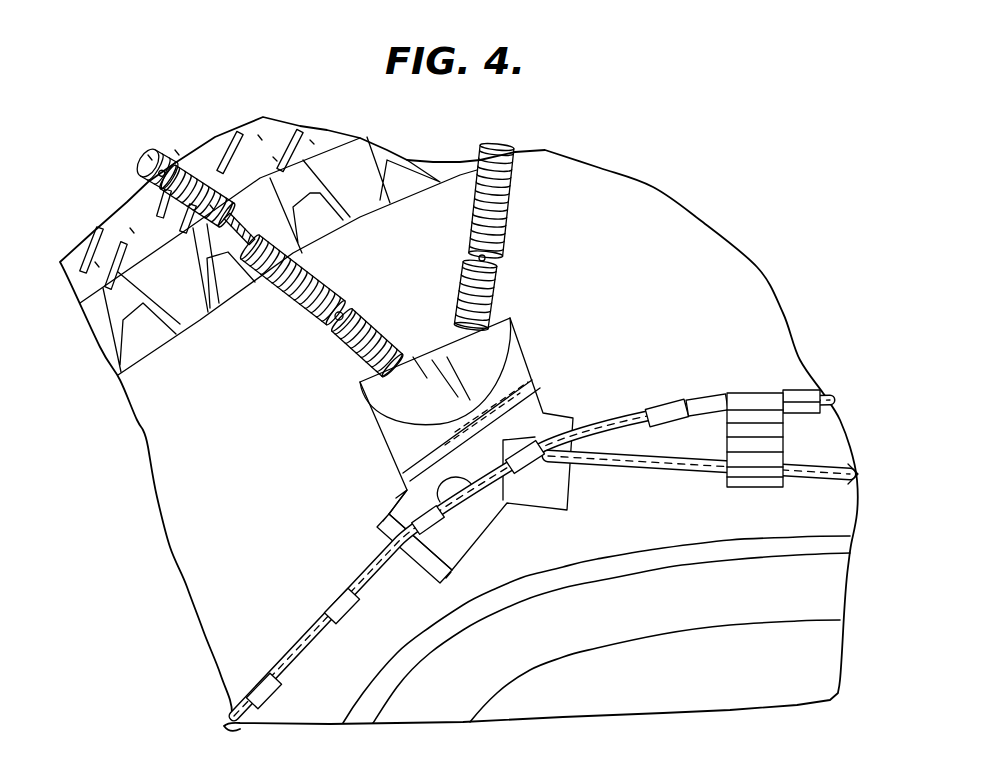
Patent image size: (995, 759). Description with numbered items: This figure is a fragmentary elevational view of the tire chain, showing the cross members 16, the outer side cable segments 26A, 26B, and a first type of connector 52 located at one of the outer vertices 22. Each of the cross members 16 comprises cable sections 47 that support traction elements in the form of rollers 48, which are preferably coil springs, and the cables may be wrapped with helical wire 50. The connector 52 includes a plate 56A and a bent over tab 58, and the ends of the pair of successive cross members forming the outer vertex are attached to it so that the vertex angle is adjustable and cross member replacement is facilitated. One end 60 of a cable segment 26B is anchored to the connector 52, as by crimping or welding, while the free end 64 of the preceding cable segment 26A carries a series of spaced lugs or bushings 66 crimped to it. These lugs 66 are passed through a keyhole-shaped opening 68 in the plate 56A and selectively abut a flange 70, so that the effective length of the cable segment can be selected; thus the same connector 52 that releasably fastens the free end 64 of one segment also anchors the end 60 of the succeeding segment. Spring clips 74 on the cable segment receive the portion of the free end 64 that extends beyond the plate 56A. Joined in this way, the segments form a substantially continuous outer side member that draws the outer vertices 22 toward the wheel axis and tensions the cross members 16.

The cross members 16 is at (290, 325).
The outer vertices 22 is at (418, 312).
The outer side member cable segment 26A is at (290, 640).
The outer side member cable segment 26B is at (825, 452).
The cable sections 47 is at (227, 248).
The rollers 48 is at (474, 283).
The helical wire 50 is at (242, 205).
The connector (first type) 52 is at (540, 334).
The plate 56A is at (404, 488).
The bent over tab 58 is at (388, 384).
The end of cable segment 60 is at (518, 444).
The free end of cable segment 64 is at (702, 400).
The lugs or bushings 66 is at (660, 404).
The keyhole-shaped opening 68 is at (442, 490).
The flange 70 is at (396, 545).
The spring clips 74 is at (748, 394).